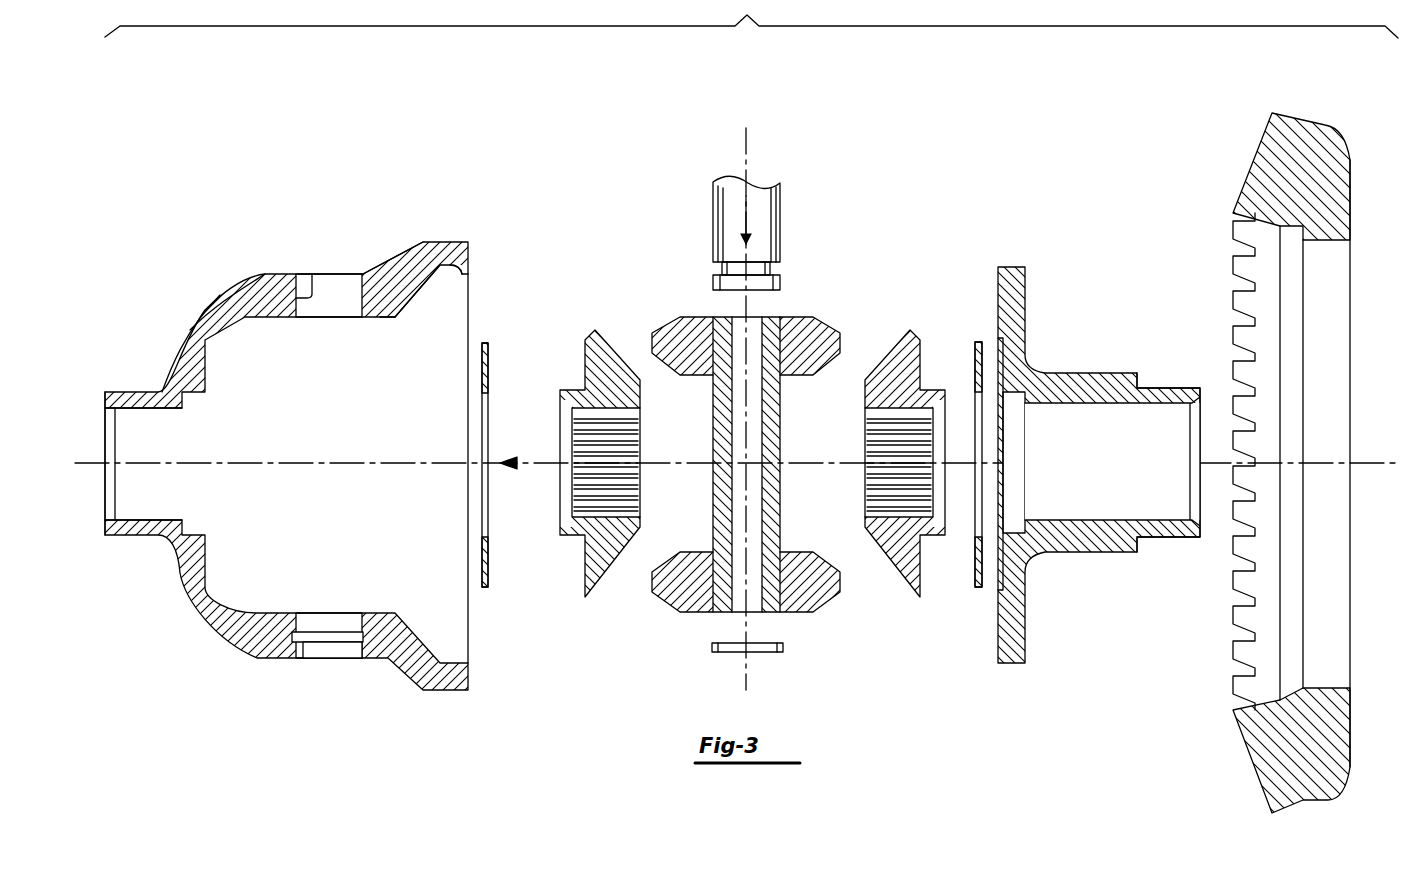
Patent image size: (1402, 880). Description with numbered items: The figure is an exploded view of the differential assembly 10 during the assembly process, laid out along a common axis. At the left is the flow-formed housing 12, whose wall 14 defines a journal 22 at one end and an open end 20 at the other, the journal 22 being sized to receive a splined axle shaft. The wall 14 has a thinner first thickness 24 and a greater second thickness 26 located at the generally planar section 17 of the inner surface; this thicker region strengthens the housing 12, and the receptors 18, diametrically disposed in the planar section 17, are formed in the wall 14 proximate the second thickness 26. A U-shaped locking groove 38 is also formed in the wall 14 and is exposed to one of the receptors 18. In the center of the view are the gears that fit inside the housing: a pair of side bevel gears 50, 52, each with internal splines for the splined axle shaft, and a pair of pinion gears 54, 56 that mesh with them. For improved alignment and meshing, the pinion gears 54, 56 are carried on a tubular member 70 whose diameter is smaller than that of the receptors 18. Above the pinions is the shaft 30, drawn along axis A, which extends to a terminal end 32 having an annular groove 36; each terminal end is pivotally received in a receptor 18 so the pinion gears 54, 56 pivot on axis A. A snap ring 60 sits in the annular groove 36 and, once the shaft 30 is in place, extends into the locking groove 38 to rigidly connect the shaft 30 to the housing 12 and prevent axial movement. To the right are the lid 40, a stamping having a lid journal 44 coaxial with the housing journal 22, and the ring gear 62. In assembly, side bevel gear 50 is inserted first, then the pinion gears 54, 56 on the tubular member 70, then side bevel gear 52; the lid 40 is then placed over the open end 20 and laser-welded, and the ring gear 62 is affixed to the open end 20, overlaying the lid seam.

The differential assembly 10 is at (751, 19).
The housing 12 is at (302, 447).
The wall 14 is at (255, 292).
The generally planar section 17 is at (372, 325).
The receptors 18 is at (300, 290).
The open end 20 is at (458, 277).
The journal 22 is at (117, 392).
The first thickness 24 is at (190, 326).
The second thickness 26 is at (378, 282).
The shaft 30 is at (714, 206).
The terminal end 32 is at (722, 298).
The annular groove 36 is at (772, 268).
The locking groove 38 is at (300, 645).
The lid 40 is at (1099, 453).
The lid journal 44 is at (1114, 376).
The side bevel gear 50 is at (575, 453).
The side bevel gear 52 is at (888, 455).
The pinion gear 54 is at (808, 336).
The pinion gear 56 is at (676, 601).
The snap ring 60 is at (783, 648).
The ring gear 62 is at (1268, 162).
The tubular member 70 is at (778, 428).